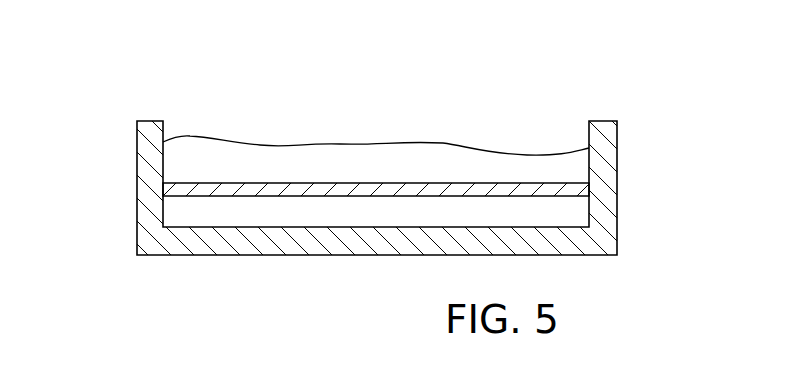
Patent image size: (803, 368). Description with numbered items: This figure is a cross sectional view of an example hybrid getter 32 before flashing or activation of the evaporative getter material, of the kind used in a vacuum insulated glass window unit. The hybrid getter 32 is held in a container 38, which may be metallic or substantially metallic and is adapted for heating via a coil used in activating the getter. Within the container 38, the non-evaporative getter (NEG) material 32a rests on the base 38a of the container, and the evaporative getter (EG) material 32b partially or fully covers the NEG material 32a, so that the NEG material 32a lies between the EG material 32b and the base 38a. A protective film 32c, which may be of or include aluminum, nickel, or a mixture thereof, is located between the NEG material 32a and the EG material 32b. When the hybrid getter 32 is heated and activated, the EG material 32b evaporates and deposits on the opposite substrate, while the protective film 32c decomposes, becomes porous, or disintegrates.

The hybrid getter 32 is at (373, 185).
The non-evaporative getter (NEG) material 32a is at (180, 215).
The evaporative getter (EG) material 32b is at (185, 149).
The protective film 32c is at (172, 189).
The container 38 is at (373, 236).
The base of the container 38a is at (280, 237).